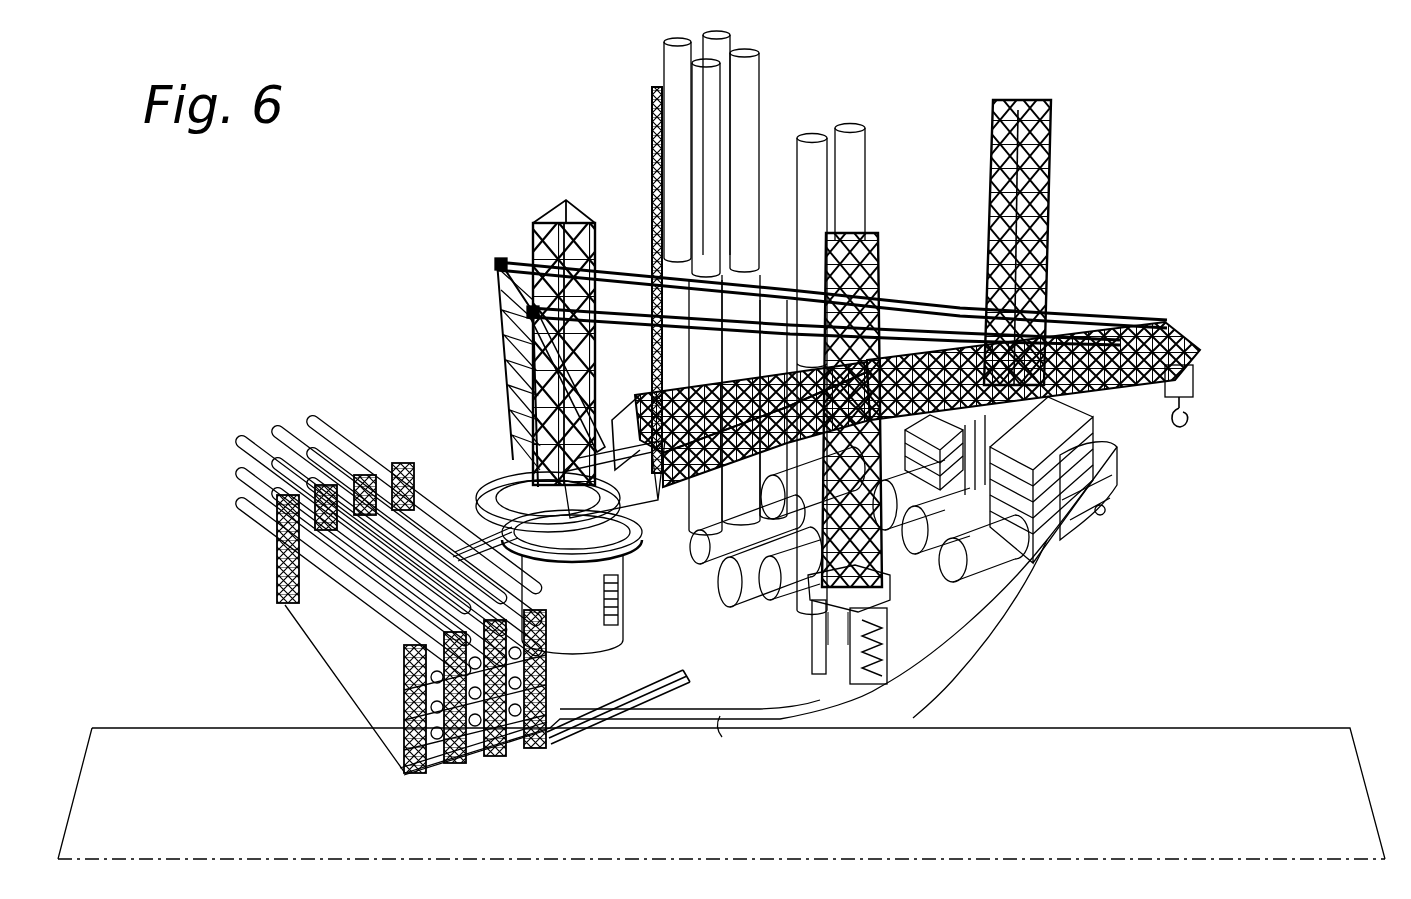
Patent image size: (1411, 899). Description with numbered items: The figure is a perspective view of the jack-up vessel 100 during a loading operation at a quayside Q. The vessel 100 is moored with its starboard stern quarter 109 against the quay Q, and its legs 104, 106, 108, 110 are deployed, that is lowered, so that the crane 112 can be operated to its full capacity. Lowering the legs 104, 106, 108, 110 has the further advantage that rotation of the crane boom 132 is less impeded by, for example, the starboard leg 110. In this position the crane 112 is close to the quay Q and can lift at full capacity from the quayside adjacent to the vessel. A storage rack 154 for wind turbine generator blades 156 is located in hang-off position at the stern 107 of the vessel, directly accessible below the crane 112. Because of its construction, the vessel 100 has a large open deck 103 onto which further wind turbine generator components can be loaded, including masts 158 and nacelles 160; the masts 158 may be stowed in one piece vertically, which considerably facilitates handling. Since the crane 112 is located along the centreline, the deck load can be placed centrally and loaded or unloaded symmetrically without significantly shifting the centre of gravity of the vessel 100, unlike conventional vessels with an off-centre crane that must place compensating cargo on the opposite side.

The vessel 100 is at (719, 508).
The open deck 103 is at (993, 582).
The leg 104 is at (1047, 208).
The leg 106 is at (535, 232).
The stern 107 is at (552, 728).
The leg 108 is at (655, 140).
The starboard stern quarter 109 is at (728, 720).
The starboard leg 110 is at (890, 560).
The crane 112 is at (517, 477).
The crane boom 132 is at (1197, 357).
The storage rack 154 is at (277, 602).
The wind turbine generator blades 156 is at (250, 485).
The masts 158 is at (750, 104).
The nacelles 160 is at (943, 577).
The quayside Q is at (1172, 757).